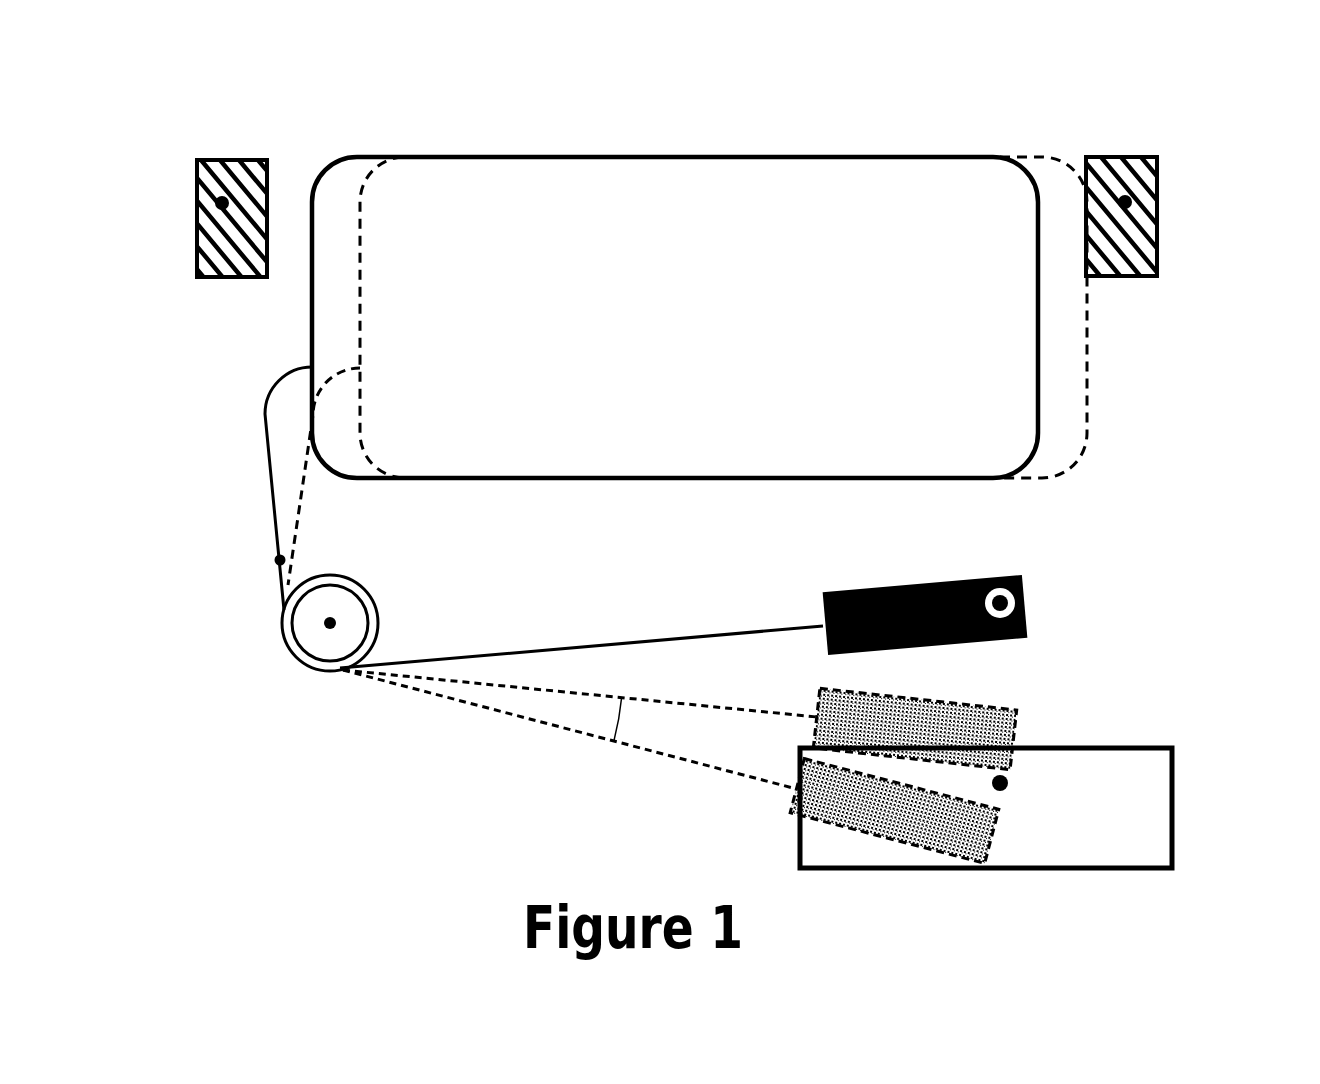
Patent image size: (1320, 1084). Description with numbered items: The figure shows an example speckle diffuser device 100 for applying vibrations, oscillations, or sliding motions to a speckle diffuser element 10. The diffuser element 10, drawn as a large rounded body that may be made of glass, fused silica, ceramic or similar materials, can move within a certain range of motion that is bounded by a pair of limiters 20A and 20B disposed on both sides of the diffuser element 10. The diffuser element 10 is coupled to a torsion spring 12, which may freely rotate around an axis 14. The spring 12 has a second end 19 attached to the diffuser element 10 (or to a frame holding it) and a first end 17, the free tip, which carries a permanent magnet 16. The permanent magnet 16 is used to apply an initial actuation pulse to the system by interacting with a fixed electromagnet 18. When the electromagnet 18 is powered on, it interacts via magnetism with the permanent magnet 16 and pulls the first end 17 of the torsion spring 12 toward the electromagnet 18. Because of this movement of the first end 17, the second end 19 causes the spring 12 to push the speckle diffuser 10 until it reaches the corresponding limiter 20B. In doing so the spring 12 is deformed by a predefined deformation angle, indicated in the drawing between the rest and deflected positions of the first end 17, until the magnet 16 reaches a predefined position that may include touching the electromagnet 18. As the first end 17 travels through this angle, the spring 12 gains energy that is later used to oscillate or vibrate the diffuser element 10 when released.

The speckle diffuser device 100 is at (748, 92).
The speckle diffuser element 10 is at (748, 272).
The torsion spring 12 is at (280, 560).
The axis 14 is at (305, 630).
The permanent magnet 16 is at (1018, 602).
The first end 17 is at (824, 558).
The electromagnet 18 is at (1000, 783).
The second end 19 is at (266, 370).
The limiter 20A is at (197, 162).
The limiter 20B is at (1125, 202).